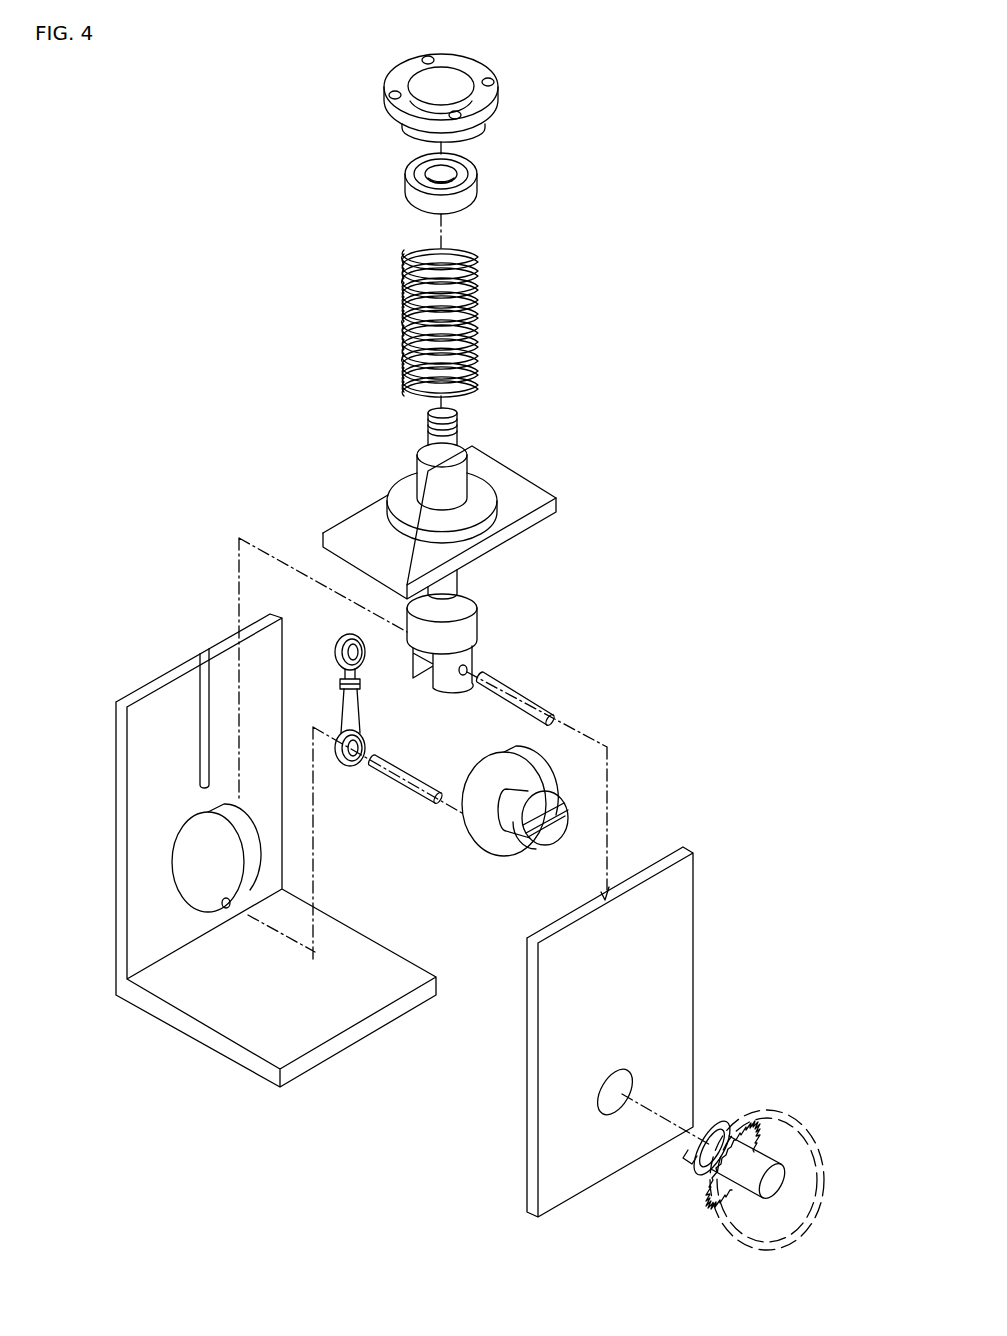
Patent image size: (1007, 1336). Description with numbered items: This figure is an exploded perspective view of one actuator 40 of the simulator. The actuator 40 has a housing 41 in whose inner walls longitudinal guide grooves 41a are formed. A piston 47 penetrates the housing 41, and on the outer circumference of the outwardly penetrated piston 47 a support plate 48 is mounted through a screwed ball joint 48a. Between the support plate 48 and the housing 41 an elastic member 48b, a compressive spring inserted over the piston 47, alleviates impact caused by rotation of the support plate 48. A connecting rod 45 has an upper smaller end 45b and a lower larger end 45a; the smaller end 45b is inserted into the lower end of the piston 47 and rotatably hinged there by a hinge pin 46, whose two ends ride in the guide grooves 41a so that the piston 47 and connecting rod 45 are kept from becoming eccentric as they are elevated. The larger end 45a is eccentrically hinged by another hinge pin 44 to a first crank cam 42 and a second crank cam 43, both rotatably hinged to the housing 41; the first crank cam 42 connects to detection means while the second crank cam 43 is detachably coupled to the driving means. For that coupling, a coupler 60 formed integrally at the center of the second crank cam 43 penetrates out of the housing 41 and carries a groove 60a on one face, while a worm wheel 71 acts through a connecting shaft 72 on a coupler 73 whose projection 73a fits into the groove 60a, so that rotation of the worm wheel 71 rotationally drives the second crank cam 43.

The actuator 40 is at (607, 148).
The housing 41 is at (140, 694).
The guide groove 41a is at (200, 657).
The first crank cam 42 is at (228, 908).
The second crank cam 43 is at (472, 835).
The hinge pin 44 is at (418, 786).
The connecting rod 45 is at (387, 721).
The larger end 45a is at (352, 766).
The smaller end 45b is at (362, 660).
The hinge pin 46 is at (528, 703).
The piston 47 is at (466, 474).
The support plate 48 is at (488, 86).
The ball joint 48a is at (474, 192).
The elastic member 48b is at (477, 318).
The coupler 60 is at (547, 829).
The groove 60a is at (537, 842).
The worm wheel 71 is at (812, 1125).
The connecting shaft 72 is at (716, 1178).
The coupler 73 is at (695, 1140).
The projection 73a is at (687, 1157).